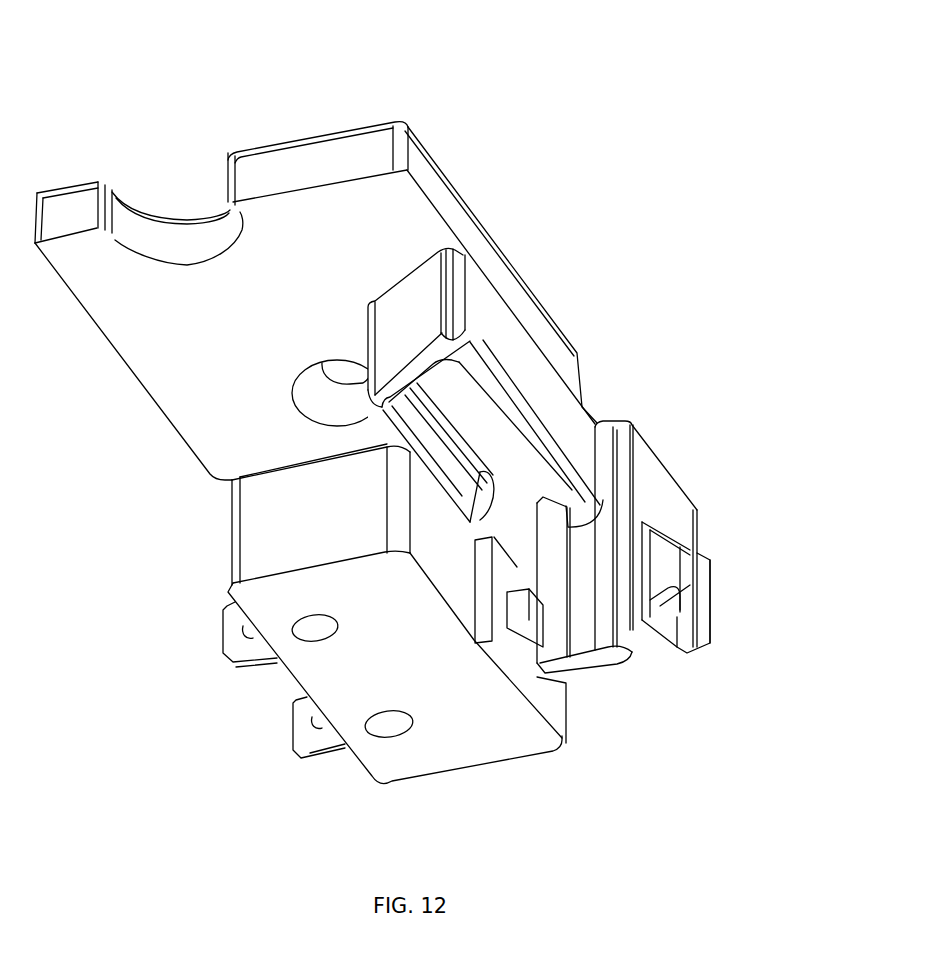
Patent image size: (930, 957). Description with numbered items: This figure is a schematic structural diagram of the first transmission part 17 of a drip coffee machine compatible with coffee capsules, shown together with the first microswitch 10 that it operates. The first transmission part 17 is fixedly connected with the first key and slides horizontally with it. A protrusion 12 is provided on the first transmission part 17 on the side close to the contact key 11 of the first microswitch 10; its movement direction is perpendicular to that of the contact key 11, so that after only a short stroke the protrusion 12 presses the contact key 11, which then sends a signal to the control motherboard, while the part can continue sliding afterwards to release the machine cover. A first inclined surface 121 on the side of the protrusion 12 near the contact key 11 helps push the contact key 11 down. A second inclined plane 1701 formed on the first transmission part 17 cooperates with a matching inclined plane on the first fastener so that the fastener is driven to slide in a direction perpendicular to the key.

The first microswitch 10 is at (383, 633).
The contact key 11 is at (529, 622).
The protrusion 12 is at (595, 665).
The first inclined surface 121 is at (552, 563).
The first transmission part 17 is at (516, 361).
The second inclined plane 1701 is at (403, 313).